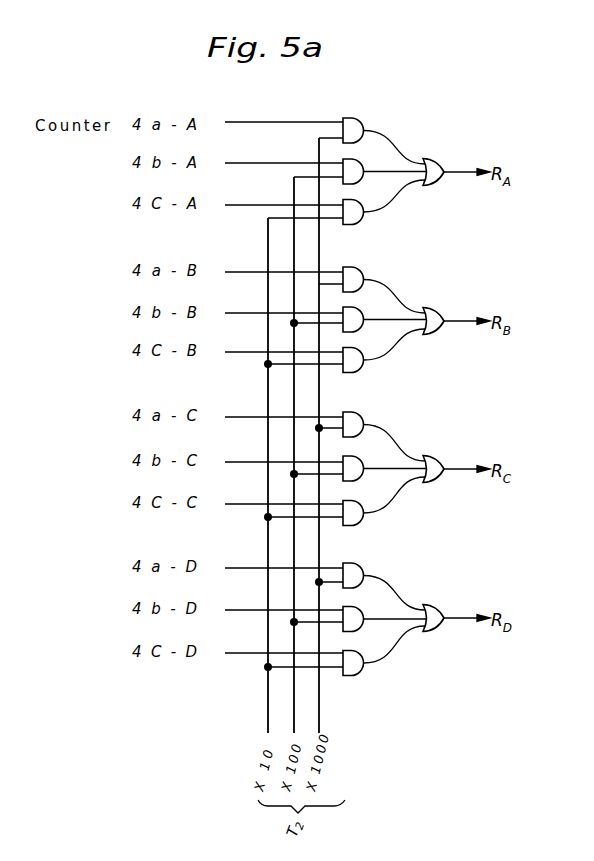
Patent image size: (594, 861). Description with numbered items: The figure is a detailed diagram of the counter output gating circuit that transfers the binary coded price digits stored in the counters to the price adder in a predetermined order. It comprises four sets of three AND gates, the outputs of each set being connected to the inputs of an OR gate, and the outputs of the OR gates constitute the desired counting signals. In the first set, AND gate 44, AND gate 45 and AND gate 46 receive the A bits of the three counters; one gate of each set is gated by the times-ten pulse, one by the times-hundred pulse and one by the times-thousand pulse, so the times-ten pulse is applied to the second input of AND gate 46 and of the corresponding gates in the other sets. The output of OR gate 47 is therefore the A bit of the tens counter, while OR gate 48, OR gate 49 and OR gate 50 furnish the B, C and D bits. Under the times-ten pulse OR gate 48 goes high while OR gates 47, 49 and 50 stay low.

The AND gate 44 is at (350, 139).
The AND gate 45 is at (350, 183).
The AND gate 46 is at (350, 222).
The OR gate 47 is at (441, 159).
The OR gate 48 is at (440, 313).
The OR gate 49 is at (448, 450).
The OR gate 50 is at (440, 610).